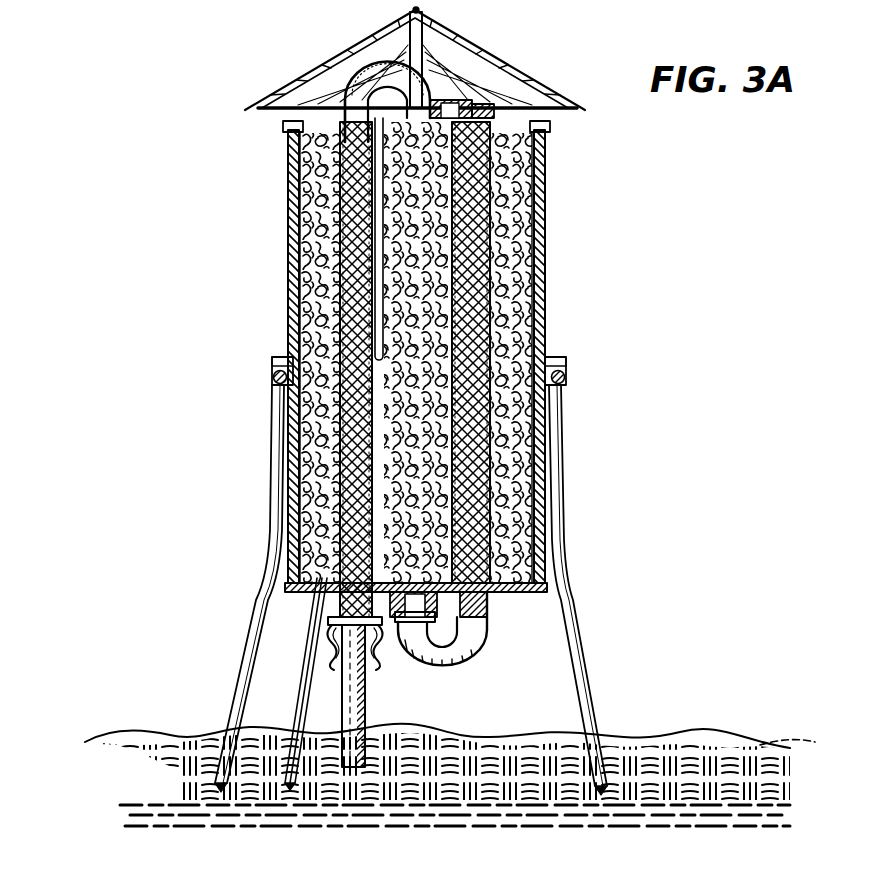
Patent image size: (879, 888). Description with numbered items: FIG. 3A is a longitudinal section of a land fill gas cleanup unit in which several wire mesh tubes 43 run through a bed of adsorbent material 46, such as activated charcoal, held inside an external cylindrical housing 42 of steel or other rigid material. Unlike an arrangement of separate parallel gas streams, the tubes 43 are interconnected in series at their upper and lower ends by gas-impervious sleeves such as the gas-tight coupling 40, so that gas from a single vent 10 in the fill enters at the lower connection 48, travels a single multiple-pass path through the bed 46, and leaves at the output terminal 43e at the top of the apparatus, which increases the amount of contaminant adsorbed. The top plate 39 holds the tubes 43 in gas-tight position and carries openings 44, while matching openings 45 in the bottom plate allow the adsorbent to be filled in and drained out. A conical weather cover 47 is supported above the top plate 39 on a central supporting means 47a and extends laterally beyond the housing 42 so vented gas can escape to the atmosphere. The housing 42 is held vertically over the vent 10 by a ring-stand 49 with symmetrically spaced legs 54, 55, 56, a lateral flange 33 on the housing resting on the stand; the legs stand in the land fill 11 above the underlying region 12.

The vent 10 is at (347, 713).
The ground surface 11 is at (677, 730).
The water 12 is at (700, 815).
The lateral flange 33 is at (383, 97).
The top plate 39 is at (270, 112).
The gas-tight coupling 40 is at (453, 660).
The housing 42 is at (543, 287).
The wire mesh tubes 43 is at (340, 268).
The output terminal 43e is at (497, 105).
The openings in top plate 44 is at (473, 100).
The openings in bottom plate 45 is at (437, 618).
The adsorbent bed 46 is at (305, 485).
The conical weather cover 47 is at (317, 67).
The central supporting means 47a is at (425, 33).
The coupling 48 is at (333, 663).
The ring-stand 49 is at (555, 378).
The leg 54 is at (238, 723).
The leg 55 is at (270, 360).
The leg 56 is at (590, 695).